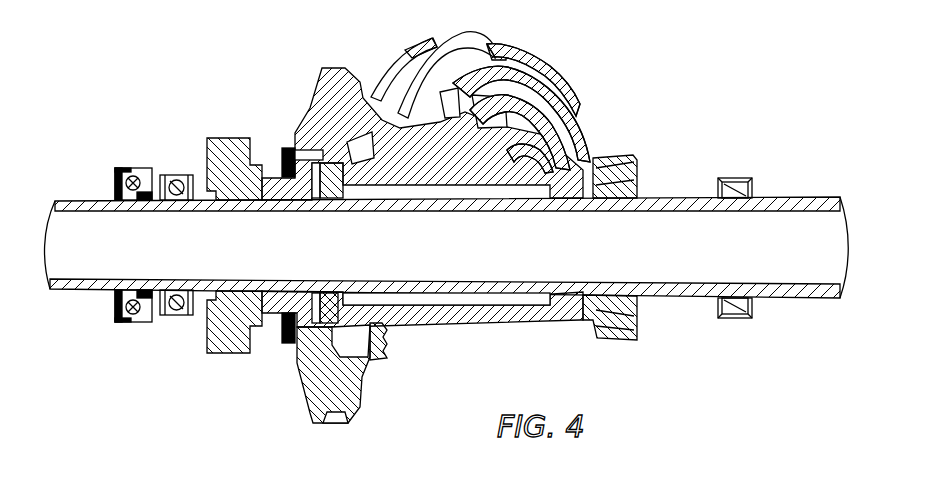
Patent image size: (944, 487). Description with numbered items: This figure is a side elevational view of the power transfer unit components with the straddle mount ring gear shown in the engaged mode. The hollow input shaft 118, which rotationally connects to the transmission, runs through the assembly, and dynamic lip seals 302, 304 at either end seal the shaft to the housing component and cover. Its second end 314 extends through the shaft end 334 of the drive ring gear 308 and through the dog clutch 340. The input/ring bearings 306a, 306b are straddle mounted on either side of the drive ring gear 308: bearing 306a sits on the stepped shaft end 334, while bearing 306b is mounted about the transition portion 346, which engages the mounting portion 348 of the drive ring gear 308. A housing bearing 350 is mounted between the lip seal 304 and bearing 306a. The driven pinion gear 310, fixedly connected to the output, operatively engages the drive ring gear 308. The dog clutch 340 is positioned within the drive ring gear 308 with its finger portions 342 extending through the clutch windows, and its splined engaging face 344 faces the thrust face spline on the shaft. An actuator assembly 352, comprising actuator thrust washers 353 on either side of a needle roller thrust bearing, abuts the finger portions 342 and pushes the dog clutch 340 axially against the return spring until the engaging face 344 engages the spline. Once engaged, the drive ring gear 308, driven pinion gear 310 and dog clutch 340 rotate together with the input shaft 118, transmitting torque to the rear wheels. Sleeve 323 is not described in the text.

The input shaft 118 is at (778, 197).
The dynamic lip seal 302 is at (730, 178).
The dynamic lip seal 304 is at (120, 168).
The input/ring bearing 306a is at (227, 138).
The input/ring bearing 306b is at (622, 156).
The drive ring gear 308 is at (330, 68).
The driven pinion gear 310 is at (553, 80).
The second end 314 is at (68, 289).
The sleeve 323 is at (353, 310).
The shaft end 334 is at (215, 299).
The dog clutch 340 is at (313, 353).
The finger portions 342 is at (292, 336).
The engaging face 344 is at (355, 300).
The transition portion 346 is at (466, 157).
The mounting portion 348 is at (372, 375).
The housing bearing 350 is at (177, 176).
The actuator assembly 352 is at (289, 125).
The actuator thrust washers 353 is at (281, 152).